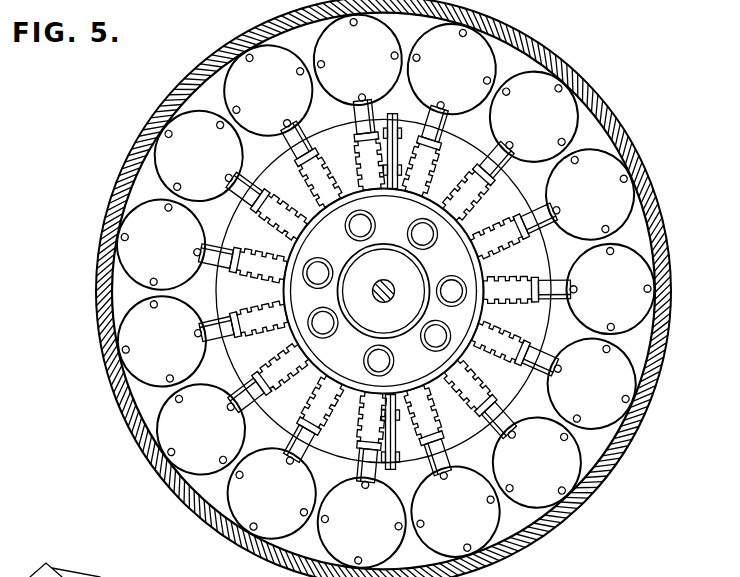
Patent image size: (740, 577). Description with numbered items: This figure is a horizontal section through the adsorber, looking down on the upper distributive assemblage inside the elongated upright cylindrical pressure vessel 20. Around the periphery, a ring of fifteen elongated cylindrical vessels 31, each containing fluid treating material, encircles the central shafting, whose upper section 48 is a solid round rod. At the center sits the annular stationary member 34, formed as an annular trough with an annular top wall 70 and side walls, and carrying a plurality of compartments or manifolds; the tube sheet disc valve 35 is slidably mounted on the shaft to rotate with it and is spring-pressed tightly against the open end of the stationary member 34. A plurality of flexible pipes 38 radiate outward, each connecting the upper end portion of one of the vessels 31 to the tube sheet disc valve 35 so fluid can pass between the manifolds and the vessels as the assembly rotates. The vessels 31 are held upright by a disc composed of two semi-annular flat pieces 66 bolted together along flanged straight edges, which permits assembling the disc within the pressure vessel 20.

The pressure vessel 20 is at (122, 168).
The cylindrical vessels 31 is at (336, 42).
The annular stationary member 34 is at (384, 291).
The tube sheet disc valve 35 is at (548, 274).
The flexible pipes 38 is at (441, 183).
The upper section 48 is at (394, 276).
The semi-annular flat pieces 66 is at (304, 174).
The annular top wall 70 is at (308, 323).